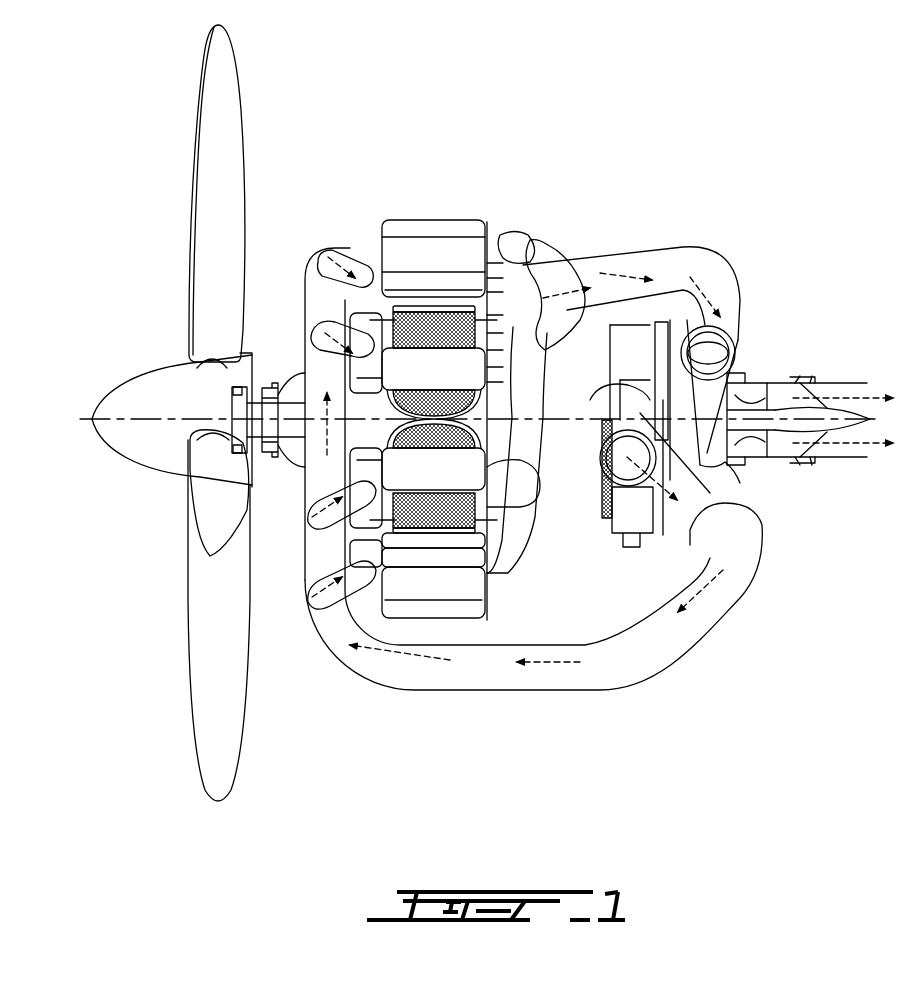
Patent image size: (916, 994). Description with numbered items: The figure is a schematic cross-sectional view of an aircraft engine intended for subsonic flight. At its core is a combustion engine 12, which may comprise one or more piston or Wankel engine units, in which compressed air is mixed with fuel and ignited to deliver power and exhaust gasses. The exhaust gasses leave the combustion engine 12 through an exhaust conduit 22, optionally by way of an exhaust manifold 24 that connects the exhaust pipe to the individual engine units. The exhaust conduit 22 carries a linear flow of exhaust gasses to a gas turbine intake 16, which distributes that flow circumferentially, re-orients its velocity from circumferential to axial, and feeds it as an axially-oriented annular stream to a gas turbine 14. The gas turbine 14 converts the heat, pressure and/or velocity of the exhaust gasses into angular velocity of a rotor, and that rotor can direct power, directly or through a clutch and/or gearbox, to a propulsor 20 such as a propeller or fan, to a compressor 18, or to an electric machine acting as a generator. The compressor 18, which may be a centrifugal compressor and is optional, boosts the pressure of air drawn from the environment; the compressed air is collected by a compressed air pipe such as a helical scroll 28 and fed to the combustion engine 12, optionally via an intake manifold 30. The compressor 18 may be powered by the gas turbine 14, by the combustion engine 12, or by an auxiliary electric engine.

The combustion engine 12 is at (405, 596).
The gas turbine 14 is at (807, 482).
The gas turbine intake 16 is at (743, 380).
The compressor 18 is at (612, 400).
The propulsor 20 is at (218, 685).
The exhaust conduit 22 is at (718, 262).
The exhaust manifold 24 is at (545, 255).
The helical scroll 28 is at (606, 428).
The intake manifold 30 is at (297, 555).